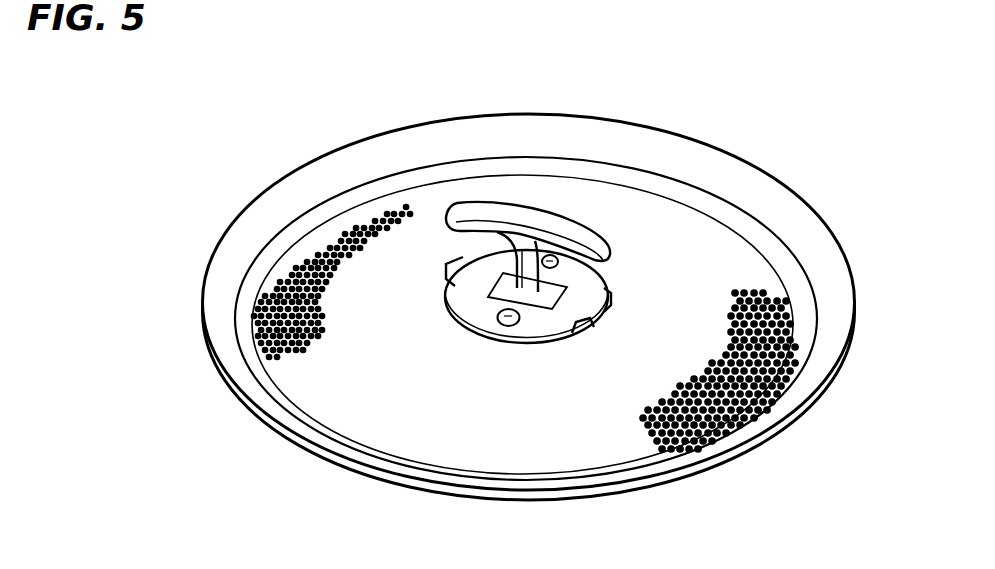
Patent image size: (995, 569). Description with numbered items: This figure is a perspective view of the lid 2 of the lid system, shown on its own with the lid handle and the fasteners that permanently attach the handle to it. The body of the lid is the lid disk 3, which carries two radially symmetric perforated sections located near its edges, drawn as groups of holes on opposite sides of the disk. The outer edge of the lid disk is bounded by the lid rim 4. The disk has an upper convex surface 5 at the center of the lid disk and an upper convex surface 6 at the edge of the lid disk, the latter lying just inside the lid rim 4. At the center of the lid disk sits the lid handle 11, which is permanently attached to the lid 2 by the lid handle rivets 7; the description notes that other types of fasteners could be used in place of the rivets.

The lid 2 is at (767, 148).
The lid disk 3 is at (268, 215).
The lid rim 4 is at (563, 113).
The upper convex surface of lid disk center 5 is at (672, 262).
The upper convex surface of lid disk edge 6 is at (640, 156).
The lid handle rivets 7 is at (497, 317).
The lid handle 11 is at (527, 186).